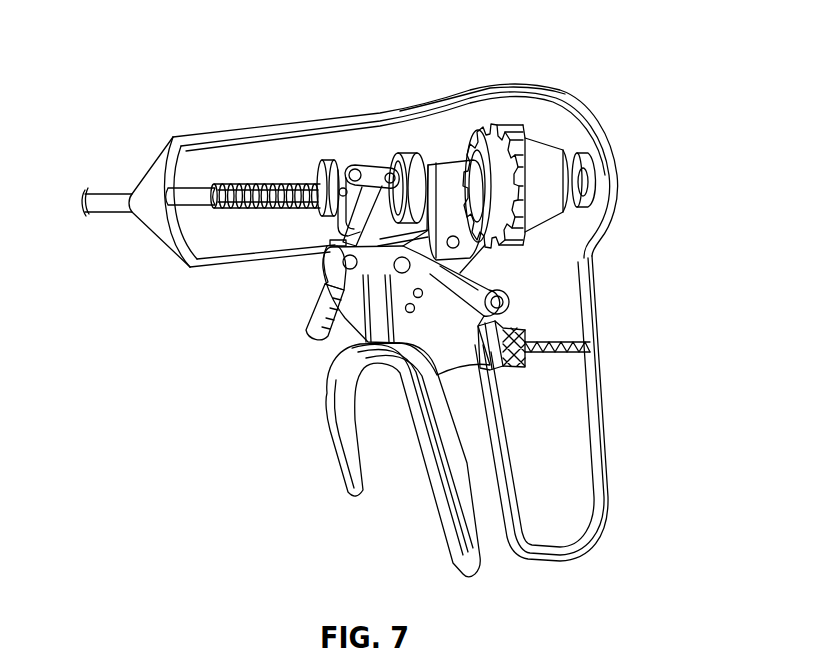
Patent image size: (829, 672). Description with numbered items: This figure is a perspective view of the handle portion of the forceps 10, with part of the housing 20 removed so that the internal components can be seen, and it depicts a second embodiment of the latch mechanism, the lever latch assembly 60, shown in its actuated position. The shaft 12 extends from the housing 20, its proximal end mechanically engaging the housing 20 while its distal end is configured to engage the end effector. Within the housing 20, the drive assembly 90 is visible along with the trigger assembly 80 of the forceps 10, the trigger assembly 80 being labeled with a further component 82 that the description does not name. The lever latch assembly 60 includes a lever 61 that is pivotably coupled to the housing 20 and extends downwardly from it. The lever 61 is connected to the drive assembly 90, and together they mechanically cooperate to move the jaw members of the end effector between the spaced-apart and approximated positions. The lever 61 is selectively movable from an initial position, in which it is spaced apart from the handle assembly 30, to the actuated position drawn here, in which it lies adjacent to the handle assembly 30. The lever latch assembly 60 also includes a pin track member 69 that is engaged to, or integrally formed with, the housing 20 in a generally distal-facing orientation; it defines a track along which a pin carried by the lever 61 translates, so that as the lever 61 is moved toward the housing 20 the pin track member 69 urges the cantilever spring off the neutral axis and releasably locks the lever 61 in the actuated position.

The forceps 10 is at (417, 35).
The shaft 12 is at (108, 196).
The housing 20 is at (530, 130).
The handle assembly 30 is at (598, 512).
The lever latch assembly 60 is at (378, 412).
The lever 61 is at (458, 542).
The pin track member 69 is at (525, 330).
The trigger assembly 80 is at (302, 343).
The release lever 82 is at (318, 312).
The drive assembly 90 is at (368, 160).